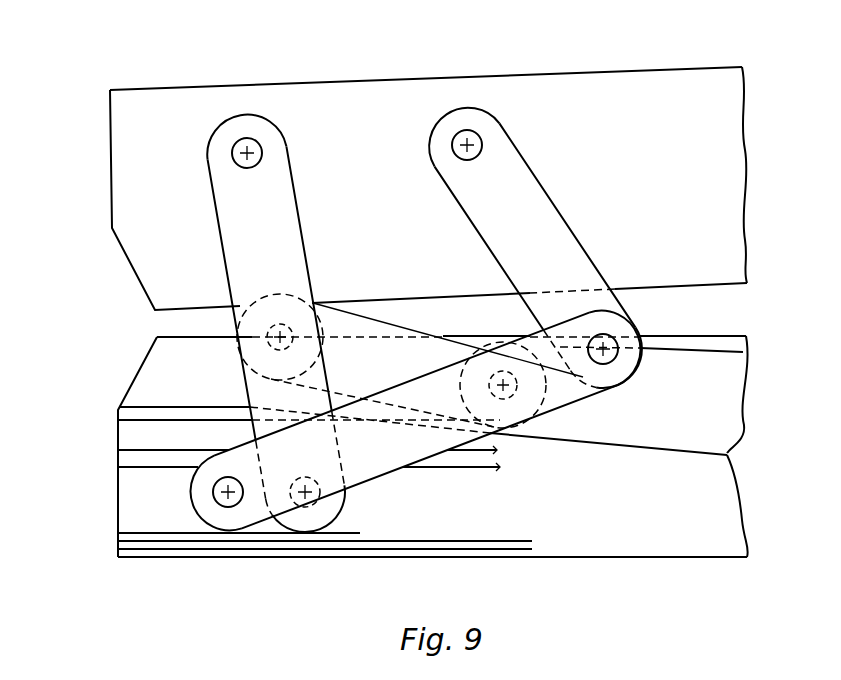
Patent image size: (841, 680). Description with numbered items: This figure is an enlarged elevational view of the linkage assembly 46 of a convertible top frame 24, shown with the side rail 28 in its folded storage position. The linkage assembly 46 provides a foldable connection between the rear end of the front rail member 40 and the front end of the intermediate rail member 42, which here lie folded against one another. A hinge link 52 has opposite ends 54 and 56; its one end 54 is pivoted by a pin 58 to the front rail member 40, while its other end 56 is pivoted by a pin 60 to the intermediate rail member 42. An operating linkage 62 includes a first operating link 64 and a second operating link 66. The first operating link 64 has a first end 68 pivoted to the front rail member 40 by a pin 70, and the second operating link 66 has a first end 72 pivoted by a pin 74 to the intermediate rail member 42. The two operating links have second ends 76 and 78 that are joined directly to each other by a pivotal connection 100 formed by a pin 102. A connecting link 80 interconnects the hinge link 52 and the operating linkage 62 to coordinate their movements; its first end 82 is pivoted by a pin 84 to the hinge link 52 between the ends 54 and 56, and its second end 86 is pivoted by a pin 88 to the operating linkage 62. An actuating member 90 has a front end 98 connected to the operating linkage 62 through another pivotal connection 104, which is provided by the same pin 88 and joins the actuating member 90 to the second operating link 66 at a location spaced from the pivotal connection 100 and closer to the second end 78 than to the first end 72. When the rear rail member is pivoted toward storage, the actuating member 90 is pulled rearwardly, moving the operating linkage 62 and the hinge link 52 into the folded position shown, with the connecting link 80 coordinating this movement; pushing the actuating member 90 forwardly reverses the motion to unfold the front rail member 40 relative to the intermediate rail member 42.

The convertible top frame 24 is at (150, 52).
The side rail 28 is at (137, 558).
The front rail member 40 is at (583, 80).
The intermediate rail member 42 is at (630, 537).
The linkage assembly 46 is at (137, 317).
The hinge link 52 is at (229, 319).
The one end of hinge link 54 is at (217, 156).
The other end of hinge link 56 is at (300, 523).
The pin 58 is at (251, 139).
The pin 60 is at (314, 512).
The operating linkage 62 is at (621, 302).
The first operating link 64 is at (560, 213).
The second operating link 66 is at (385, 452).
The first end of first operating link 68 is at (497, 128).
The pin 70 is at (472, 130).
The first end of second operating link 72 is at (247, 530).
The pin 74 is at (222, 505).
The second end of first operating link 76 is at (604, 280).
The second end of second operating link 78 is at (598, 393).
The connecting link 80 is at (388, 318).
The first end of connecting link 82 is at (293, 288).
The pin 84 is at (243, 298).
The second end of connecting link 86 is at (545, 415).
The pin 88 is at (512, 402).
The actuating member 90 is at (642, 450).
The front end of actuating member 98 is at (487, 336).
The pivotal connection 100 is at (620, 358).
The pin 102 is at (617, 337).
The pivotal connection 104 is at (500, 458).